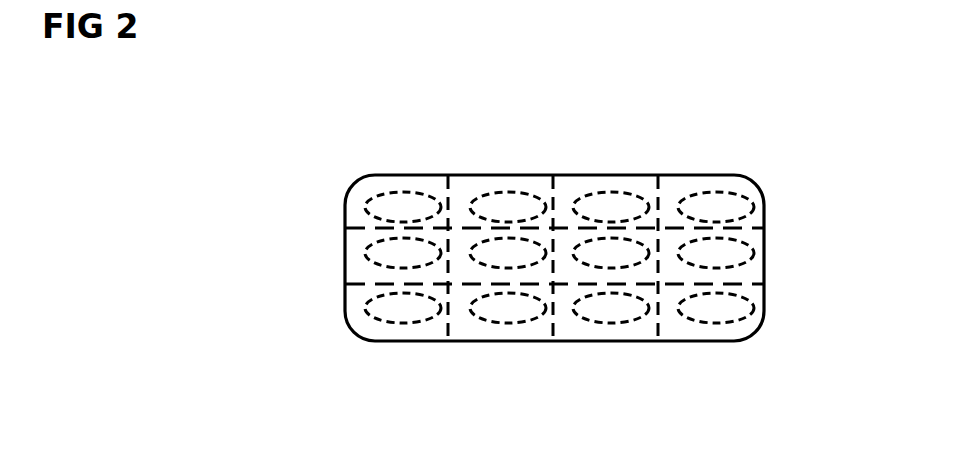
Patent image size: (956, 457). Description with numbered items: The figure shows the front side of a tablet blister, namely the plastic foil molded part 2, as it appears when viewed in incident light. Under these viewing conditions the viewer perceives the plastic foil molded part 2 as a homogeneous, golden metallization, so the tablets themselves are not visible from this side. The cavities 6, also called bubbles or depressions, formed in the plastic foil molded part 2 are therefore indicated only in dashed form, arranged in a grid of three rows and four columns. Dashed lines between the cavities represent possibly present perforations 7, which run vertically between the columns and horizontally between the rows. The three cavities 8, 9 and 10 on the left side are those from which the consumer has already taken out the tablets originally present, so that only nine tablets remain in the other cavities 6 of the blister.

The plastic foil molded part 2 is at (762, 166).
The cavities 6 is at (758, 262).
The perforations 7 is at (544, 165).
The cavity 8 is at (403, 197).
The cavity 9 is at (395, 242).
The cavity 10 is at (402, 314).